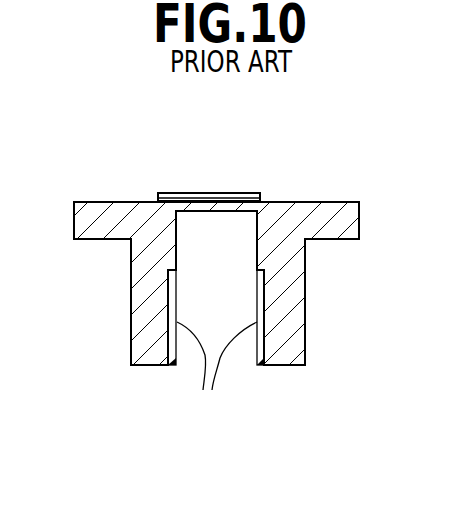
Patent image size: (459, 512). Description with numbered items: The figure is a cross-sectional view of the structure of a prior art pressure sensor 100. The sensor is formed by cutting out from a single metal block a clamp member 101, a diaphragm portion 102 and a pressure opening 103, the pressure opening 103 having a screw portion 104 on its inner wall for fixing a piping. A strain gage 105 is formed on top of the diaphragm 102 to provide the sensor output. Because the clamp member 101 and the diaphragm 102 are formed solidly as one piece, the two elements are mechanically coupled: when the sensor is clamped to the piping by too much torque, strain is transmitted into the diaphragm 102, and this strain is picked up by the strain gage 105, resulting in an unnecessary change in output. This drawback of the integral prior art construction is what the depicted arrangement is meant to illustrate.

The prior art nozzle assembly 100 is at (229, 261).
The clamp member 101 is at (290, 292).
The diaphragm portion 102 is at (235, 202).
The pressure opening 103 is at (202, 275).
The screw portion 104 is at (217, 372).
The strain gage 105 is at (213, 192).